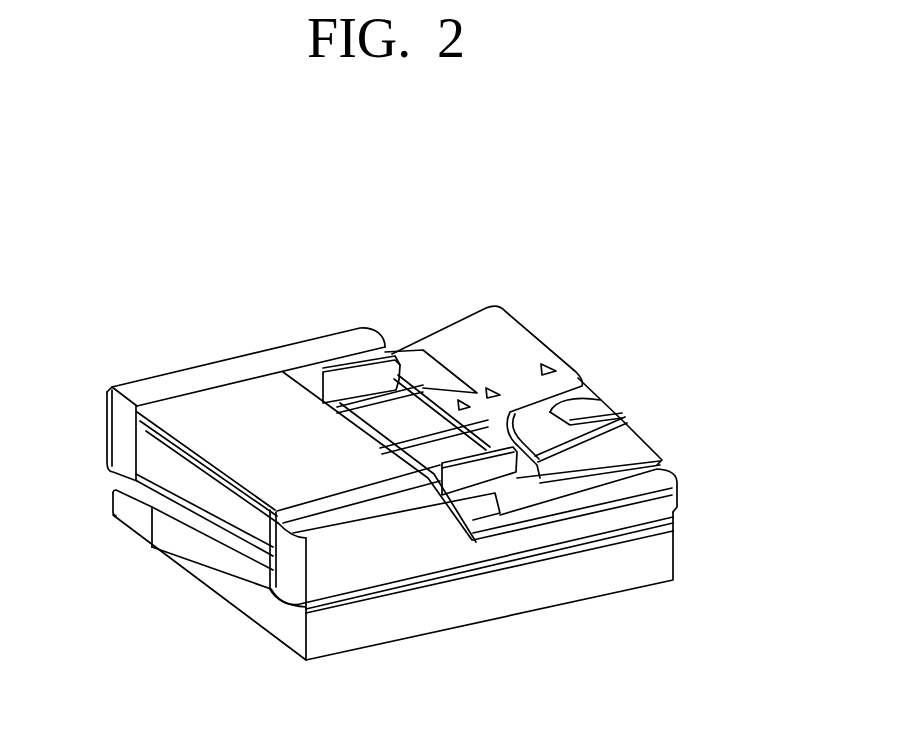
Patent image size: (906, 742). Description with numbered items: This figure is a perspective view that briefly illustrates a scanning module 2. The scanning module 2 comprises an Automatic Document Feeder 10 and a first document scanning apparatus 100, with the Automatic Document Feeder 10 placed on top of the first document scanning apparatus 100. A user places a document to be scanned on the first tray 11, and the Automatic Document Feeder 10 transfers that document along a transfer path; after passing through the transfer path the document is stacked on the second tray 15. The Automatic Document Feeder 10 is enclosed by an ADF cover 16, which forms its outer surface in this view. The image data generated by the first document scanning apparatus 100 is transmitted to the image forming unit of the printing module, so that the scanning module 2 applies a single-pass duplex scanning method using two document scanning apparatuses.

The scanning module 2 is at (378, 270).
The Automatic Document Feeder 10 is at (106, 417).
The first tray 11 is at (518, 347).
The second tray 15 is at (552, 432).
The ADF cover 16 is at (233, 415).
The first document scanning apparatus 100 is at (685, 549).